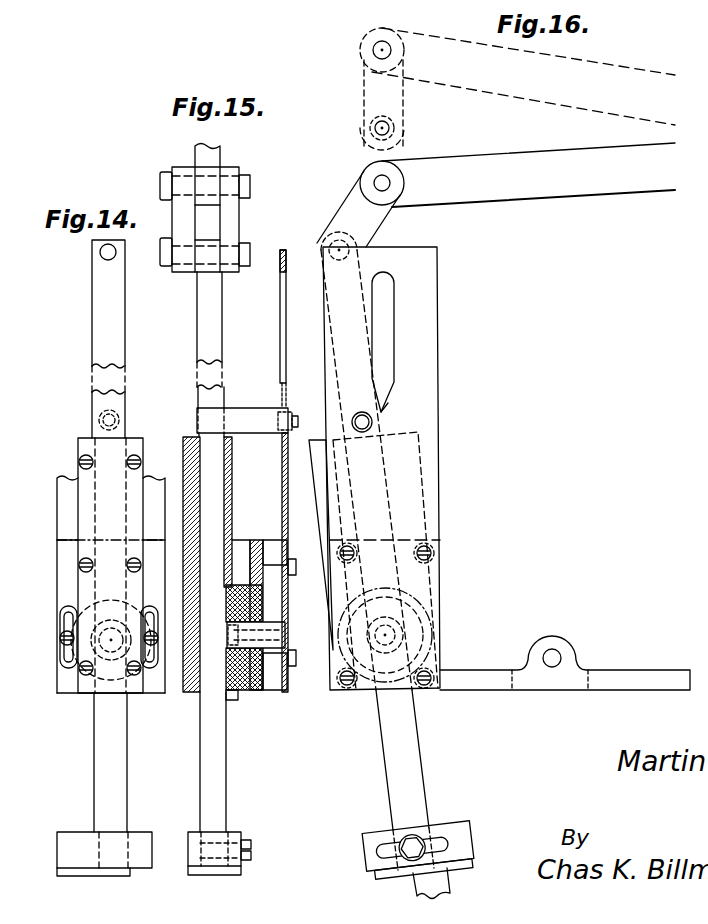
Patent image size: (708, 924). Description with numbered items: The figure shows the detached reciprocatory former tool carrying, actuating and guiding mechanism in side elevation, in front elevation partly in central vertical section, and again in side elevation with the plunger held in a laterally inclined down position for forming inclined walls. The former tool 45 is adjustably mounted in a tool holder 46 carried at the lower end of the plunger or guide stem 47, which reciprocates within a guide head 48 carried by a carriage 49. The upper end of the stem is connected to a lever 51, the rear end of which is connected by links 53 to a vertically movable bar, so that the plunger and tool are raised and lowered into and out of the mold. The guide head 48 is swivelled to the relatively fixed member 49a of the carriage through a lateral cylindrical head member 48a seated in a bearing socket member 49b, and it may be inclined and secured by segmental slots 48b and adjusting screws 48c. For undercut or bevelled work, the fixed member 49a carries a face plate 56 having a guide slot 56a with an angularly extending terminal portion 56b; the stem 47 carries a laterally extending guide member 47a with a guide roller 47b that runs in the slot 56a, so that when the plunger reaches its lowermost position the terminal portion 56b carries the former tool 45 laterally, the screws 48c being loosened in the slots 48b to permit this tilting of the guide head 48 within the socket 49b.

In FIG. 16, the former tool 45 is at (417, 887).
In FIG. 14, the tool holder 46 is at (72, 846).
In FIG. 15, the tool holder 46 is at (232, 833).
In FIG. 16, the tool holder 46 is at (373, 838).
In FIG. 14, the plunger or guide stem 47 is at (100, 336).
In FIG. 15, the plunger or guide stem 47 is at (206, 330).
In FIG. 16, the plunger or guide stem 47 is at (392, 758).
In FIG. 15, the guide member 47a is at (246, 426).
In FIG. 16, the guide member 47a is at (373, 422).
In FIG. 14, the guide roller 47b is at (98, 420).
In FIG. 16, the guide roller 47b is at (356, 416).
In FIG. 14, the guide head 48 is at (88, 476).
In FIG. 15, the guide head 48 is at (185, 452).
In FIG. 16, the guide head 48 is at (440, 467).
In FIG. 15, the cylindrical head member 48a is at (262, 669).
In FIG. 16, the cylindrical head member 48a is at (447, 617).
In FIG. 14, the segmental slots 48b is at (66, 660).
In FIG. 15, the segmental slots 48b is at (190, 694).
In FIG. 14, the adjusting screws 48c is at (150, 634).
In FIG. 16, the adjusting screws 48c is at (443, 640).
In FIG. 16, the carriage 49 is at (617, 676).
In FIG. 14, the fixed member of the carriage 49a is at (70, 578).
In FIG. 15, the fixed member of the carriage 49a is at (258, 607).
In FIG. 16, the fixed member of the carriage 49a is at (447, 577).
In FIG. 15, the bearing socket member 49b is at (254, 548).
In FIG. 15, the lever 51 is at (213, 156).
In FIG. 16, the lever 51 is at (513, 90).
In FIG. 15, the links 53 is at (240, 216).
In FIG. 16, the links 53 is at (398, 105).
In FIG. 14, the face plate 56 is at (68, 515).
In FIG. 15, the face plate 56 is at (288, 499).
In FIG. 16, the face plate 56 is at (431, 370).
In FIG. 15, the guide slot 56a is at (282, 329).
In FIG. 16, the guide slot 56a is at (394, 313).
In FIG. 15, the angularly extending terminal portion 56b is at (283, 401).
In FIG. 16, the angularly extending terminal portion 56b is at (389, 404).